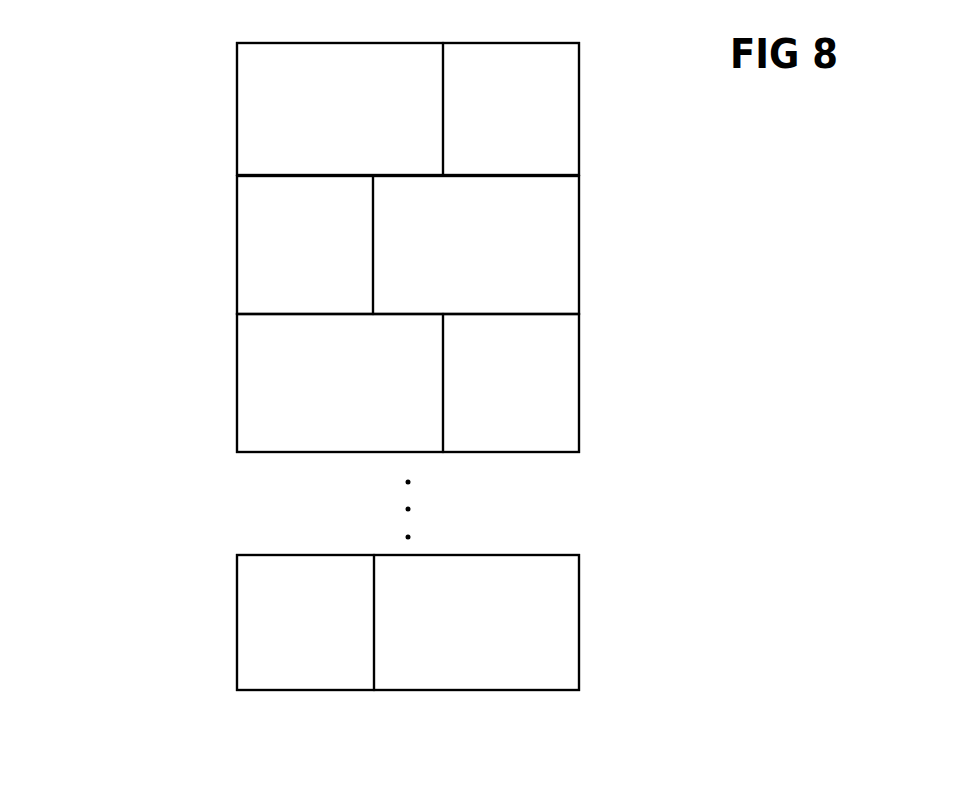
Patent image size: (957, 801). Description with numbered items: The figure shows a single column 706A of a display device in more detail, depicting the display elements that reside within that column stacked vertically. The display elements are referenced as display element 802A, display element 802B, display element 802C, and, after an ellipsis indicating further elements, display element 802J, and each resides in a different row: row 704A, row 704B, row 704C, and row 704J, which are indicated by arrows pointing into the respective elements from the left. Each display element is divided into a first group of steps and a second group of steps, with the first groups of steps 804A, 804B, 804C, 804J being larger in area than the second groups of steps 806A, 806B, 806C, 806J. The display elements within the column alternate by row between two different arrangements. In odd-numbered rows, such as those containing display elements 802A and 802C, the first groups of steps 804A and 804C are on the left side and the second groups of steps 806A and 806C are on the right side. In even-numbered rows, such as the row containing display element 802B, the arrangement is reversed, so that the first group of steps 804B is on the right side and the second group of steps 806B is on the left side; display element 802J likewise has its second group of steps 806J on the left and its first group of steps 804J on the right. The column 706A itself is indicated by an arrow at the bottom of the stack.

The display element 802A is at (595, 43).
The display element 802B is at (595, 176).
The display element 802C is at (595, 314).
The display element 802J is at (595, 555).
The first group of steps 804A is at (313, 117).
The first group of steps 804B is at (449, 256).
The first group of steps 804C is at (313, 394).
The first group of steps 804J is at (450, 632).
The second group of steps 806A is at (483, 117).
The second group of steps 806B is at (278, 256).
The second group of steps 806C is at (484, 394).
The second group of steps 806J is at (332, 632).
The row 704A is at (183, 107).
The row 704B is at (183, 246).
The row 704C is at (183, 384).
The row 704J is at (183, 622).
The column 706A is at (409, 728).